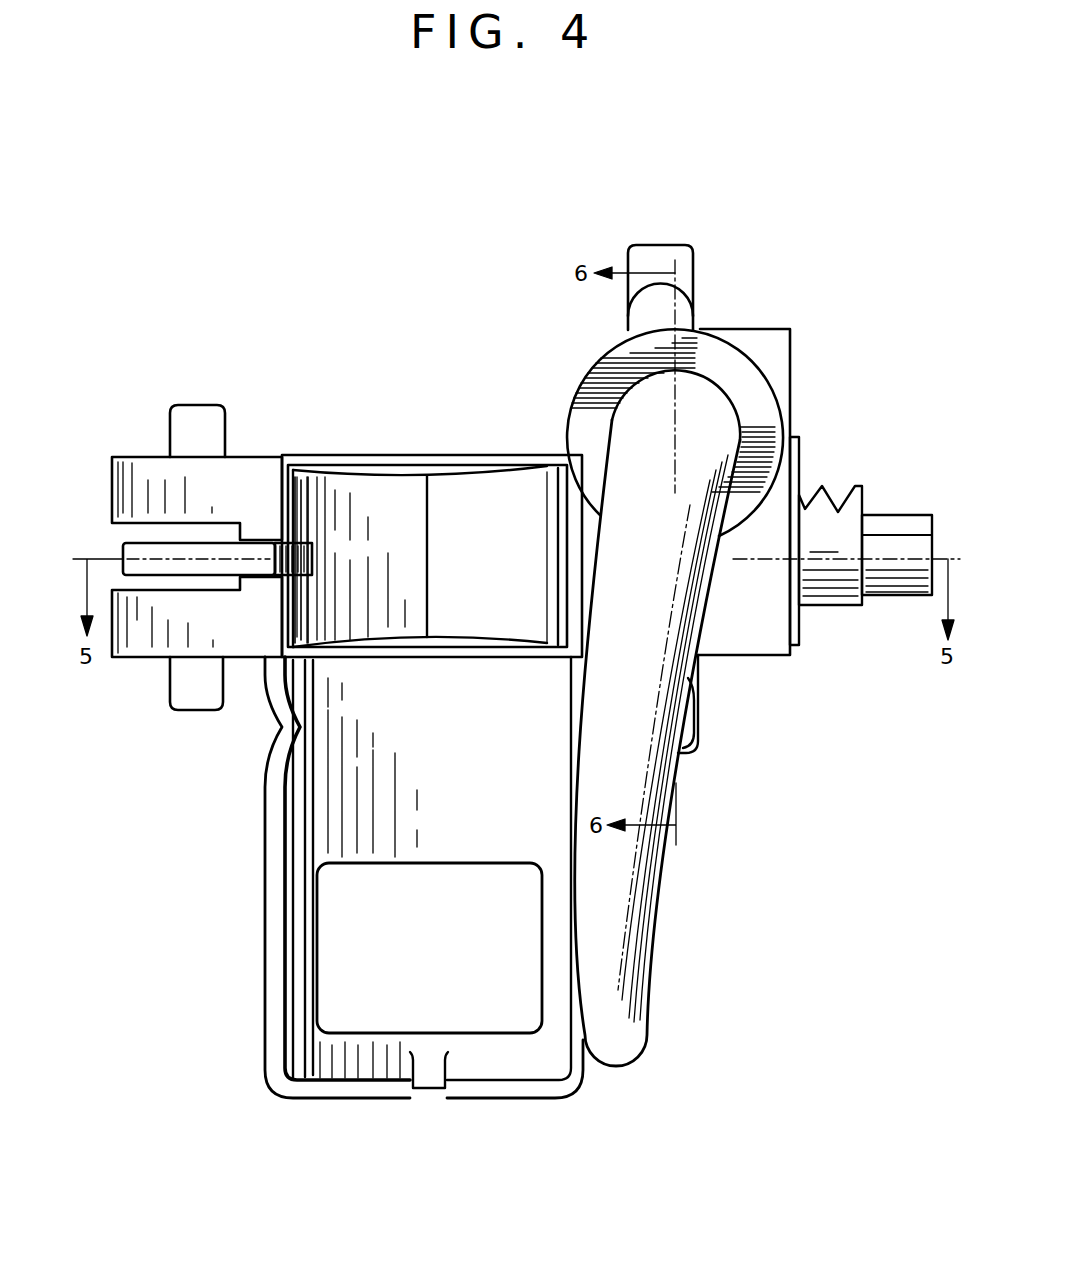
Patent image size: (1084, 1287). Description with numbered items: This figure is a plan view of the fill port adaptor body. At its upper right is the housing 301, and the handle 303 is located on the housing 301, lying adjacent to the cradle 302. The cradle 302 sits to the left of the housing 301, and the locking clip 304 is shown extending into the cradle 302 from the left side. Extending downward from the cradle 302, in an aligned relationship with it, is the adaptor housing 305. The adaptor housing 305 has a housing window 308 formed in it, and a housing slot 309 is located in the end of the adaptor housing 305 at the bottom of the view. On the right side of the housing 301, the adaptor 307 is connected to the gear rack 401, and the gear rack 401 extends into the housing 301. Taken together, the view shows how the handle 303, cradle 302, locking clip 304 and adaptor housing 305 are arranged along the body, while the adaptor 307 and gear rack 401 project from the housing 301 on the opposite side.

The housing 301 is at (799, 447).
The cradle 302 is at (355, 507).
The handle 303 is at (613, 983).
The locking clip 304 is at (133, 553).
The adaptor housing 305 is at (343, 783).
The adaptor 307 is at (897, 542).
The housing window 308 is at (375, 965).
The housing slot 309 is at (423, 1093).
The gear rack 401 is at (822, 486).